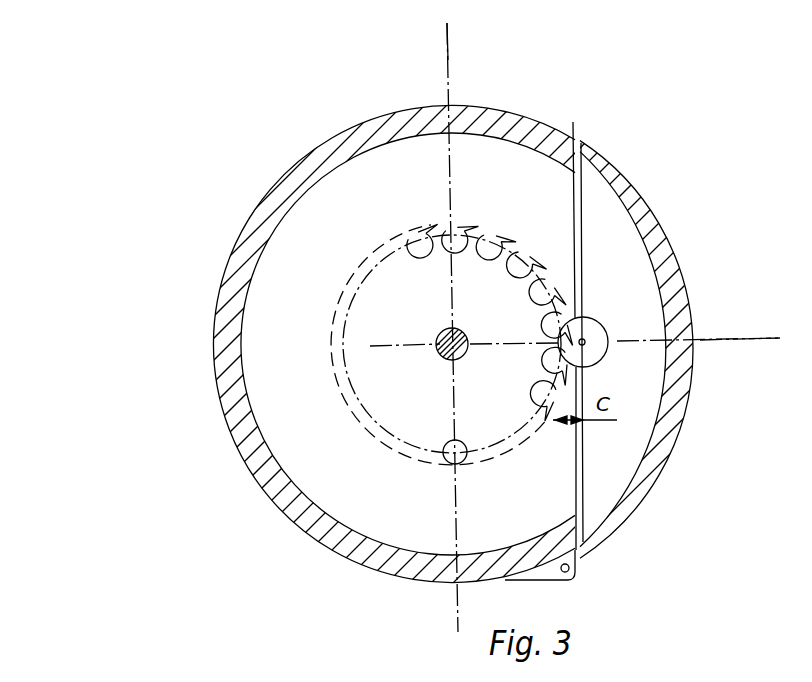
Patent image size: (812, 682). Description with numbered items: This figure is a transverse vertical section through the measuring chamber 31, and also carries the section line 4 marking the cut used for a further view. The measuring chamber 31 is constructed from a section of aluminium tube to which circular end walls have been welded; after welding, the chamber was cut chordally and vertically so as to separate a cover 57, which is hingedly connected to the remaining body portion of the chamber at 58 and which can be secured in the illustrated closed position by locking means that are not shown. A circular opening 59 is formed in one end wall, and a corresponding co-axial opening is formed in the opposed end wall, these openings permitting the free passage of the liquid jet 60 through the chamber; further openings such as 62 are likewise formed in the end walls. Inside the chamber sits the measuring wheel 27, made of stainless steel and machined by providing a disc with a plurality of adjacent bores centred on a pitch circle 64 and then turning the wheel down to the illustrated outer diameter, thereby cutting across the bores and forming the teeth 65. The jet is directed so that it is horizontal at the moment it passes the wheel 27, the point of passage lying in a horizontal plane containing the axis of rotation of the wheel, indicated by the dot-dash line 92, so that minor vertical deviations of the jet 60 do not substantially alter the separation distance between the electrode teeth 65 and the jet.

The section line 4- 4 is at (525, 45).
The measuring wheel 27 is at (375, 340).
The measuring chamber 31 is at (319, 122).
The cover 57 is at (610, 170).
The hinge connection 58 is at (569, 568).
The circular opening 59 is at (598, 322).
The liquid jet 60 is at (588, 346).
The further opening 62 is at (447, 460).
The pitch circle 64 is at (373, 258).
The teeth 65 is at (480, 226).
The dot-dash line 92 is at (747, 338).